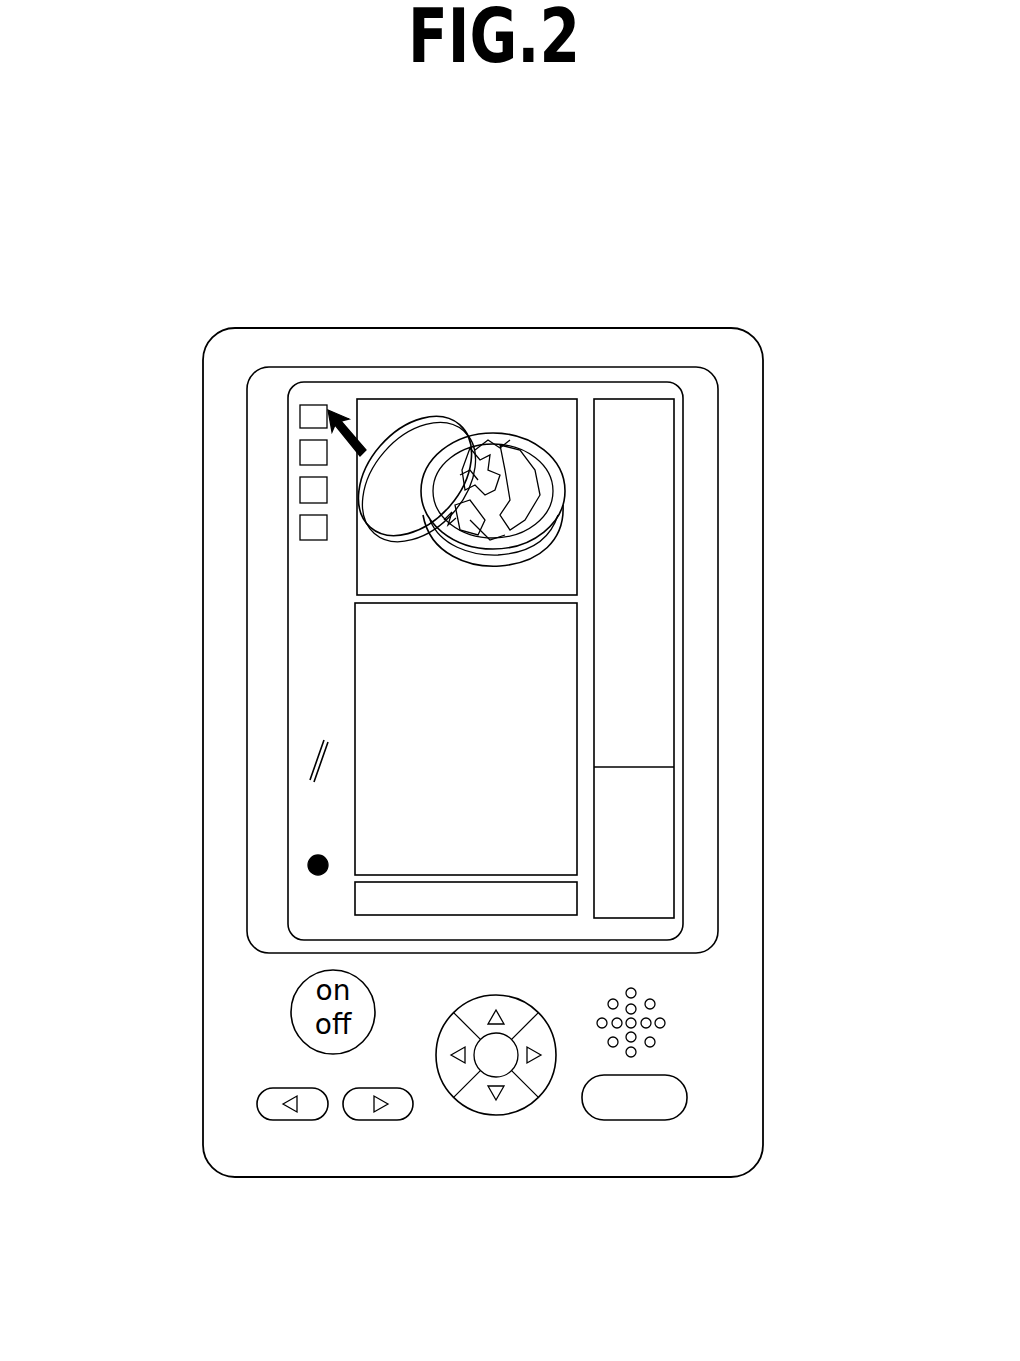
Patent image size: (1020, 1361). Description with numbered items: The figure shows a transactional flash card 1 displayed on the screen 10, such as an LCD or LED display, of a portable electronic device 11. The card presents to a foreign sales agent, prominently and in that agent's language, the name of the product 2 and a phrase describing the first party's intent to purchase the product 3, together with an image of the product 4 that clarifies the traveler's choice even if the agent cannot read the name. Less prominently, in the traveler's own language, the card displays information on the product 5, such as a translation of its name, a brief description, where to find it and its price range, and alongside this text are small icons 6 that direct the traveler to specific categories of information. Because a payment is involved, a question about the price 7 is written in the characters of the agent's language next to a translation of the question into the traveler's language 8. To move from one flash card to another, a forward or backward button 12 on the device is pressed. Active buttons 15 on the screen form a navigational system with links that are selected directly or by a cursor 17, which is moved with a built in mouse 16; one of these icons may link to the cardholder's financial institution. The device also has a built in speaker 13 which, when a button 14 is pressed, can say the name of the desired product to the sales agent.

The transactional flash card 1 is at (320, 597).
The name of the product 2 is at (663, 477).
The phrase describing the first party's intent to purchase the product 3 is at (662, 780).
The image of the product 4 is at (367, 555).
The information on the product 5 is at (360, 658).
The small icons 6 is at (300, 858).
The question about the price 7 is at (306, 857).
The translation of the question into the traveler's language 8 is at (355, 887).
The screen 10 is at (702, 405).
The portable electronic device 11 is at (584, 248).
The forward or backward button 12 is at (262, 1108).
The built in speaker 13 is at (665, 1012).
The button 14 is at (687, 1097).
The active buttons 15 is at (300, 522).
The built in mouse 16 is at (513, 1100).
The cursor 17 is at (338, 406).